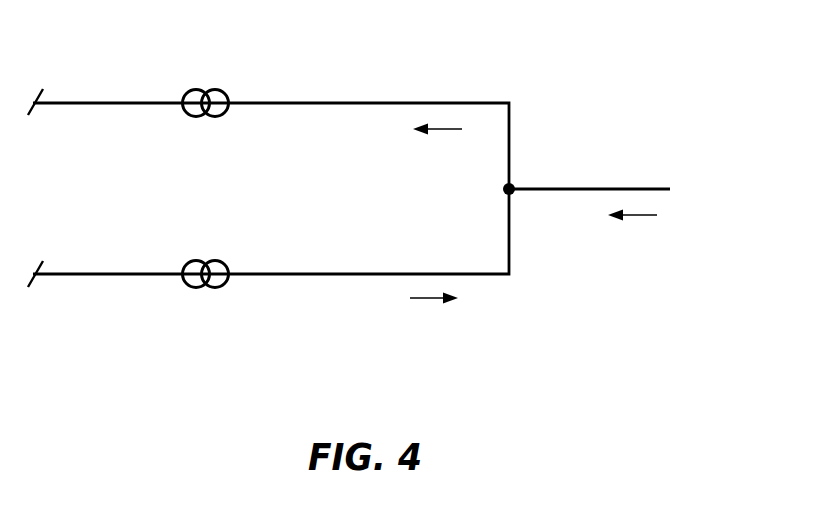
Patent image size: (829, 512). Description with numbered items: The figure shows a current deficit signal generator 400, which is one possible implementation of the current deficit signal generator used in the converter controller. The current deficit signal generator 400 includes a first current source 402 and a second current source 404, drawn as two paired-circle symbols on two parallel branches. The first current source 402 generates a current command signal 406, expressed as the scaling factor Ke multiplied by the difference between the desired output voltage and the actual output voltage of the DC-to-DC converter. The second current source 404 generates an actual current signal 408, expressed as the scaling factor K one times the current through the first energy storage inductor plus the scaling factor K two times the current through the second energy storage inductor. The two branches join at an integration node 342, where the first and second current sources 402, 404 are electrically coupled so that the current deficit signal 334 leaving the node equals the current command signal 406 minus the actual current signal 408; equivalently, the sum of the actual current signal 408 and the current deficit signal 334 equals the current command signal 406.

The current deficit signal generator 400 is at (400, 193).
The first current source 402 is at (208, 74).
The second current source 404 is at (207, 243).
The current command signal 406 is at (445, 129).
The actual current signal 408 is at (443, 298).
The integration node 342 is at (502, 192).
The current deficit signal 334 is at (640, 215).